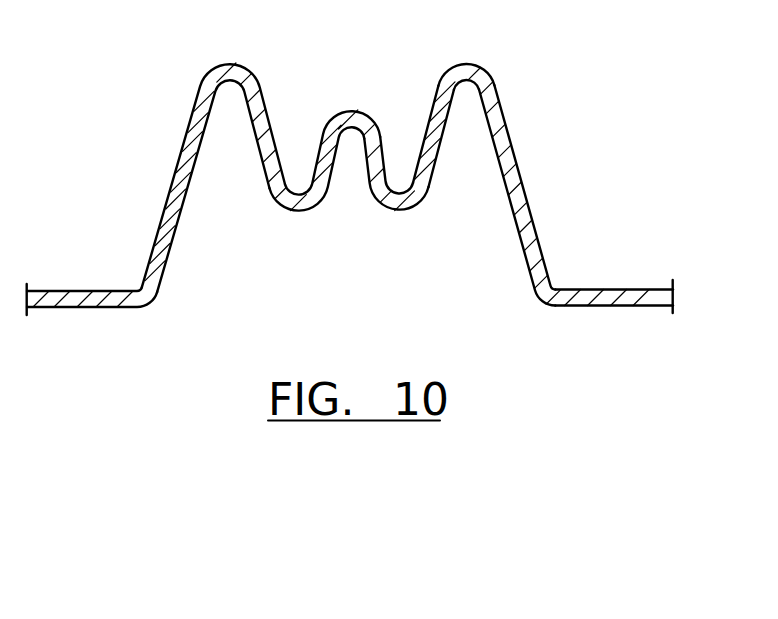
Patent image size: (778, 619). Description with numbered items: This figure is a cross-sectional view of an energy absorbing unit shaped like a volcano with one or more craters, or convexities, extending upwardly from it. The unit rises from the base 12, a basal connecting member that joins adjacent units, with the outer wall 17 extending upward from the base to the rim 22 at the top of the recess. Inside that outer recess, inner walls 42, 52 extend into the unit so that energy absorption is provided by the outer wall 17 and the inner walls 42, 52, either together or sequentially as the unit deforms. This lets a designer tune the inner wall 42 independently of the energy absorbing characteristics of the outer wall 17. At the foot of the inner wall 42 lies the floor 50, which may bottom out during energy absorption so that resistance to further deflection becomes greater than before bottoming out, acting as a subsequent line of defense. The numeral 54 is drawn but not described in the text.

The base 12 is at (605, 288).
The outer wall 17 is at (523, 188).
The rim 22 is at (470, 64).
The inner wall 42 is at (427, 127).
The floor 50 is at (349, 163).
The inner wall 52 is at (387, 147).
The auxiliary rib crest 54 is at (350, 112).